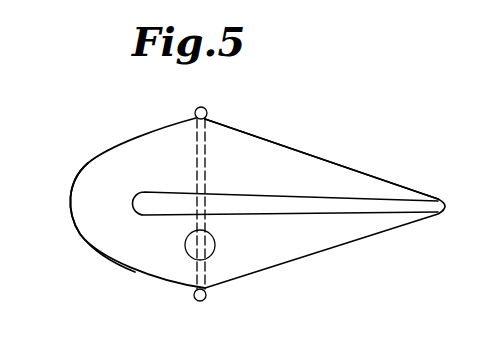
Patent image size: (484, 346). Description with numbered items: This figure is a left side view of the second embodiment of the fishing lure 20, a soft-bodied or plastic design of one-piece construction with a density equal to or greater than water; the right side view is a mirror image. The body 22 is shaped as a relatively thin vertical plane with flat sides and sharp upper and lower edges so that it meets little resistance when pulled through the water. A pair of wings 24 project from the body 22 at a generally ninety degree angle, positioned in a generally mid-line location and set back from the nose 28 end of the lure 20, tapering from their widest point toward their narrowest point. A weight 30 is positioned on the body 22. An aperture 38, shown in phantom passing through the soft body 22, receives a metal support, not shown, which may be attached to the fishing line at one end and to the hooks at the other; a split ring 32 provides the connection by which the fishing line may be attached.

The fishing lure 20 is at (345, 159).
The body 22 is at (283, 164).
The wings 24 is at (385, 204).
The nose 28 is at (72, 207).
The weight 30 is at (186, 251).
The split ring 32 is at (205, 109).
The aperture 38 is at (216, 154).